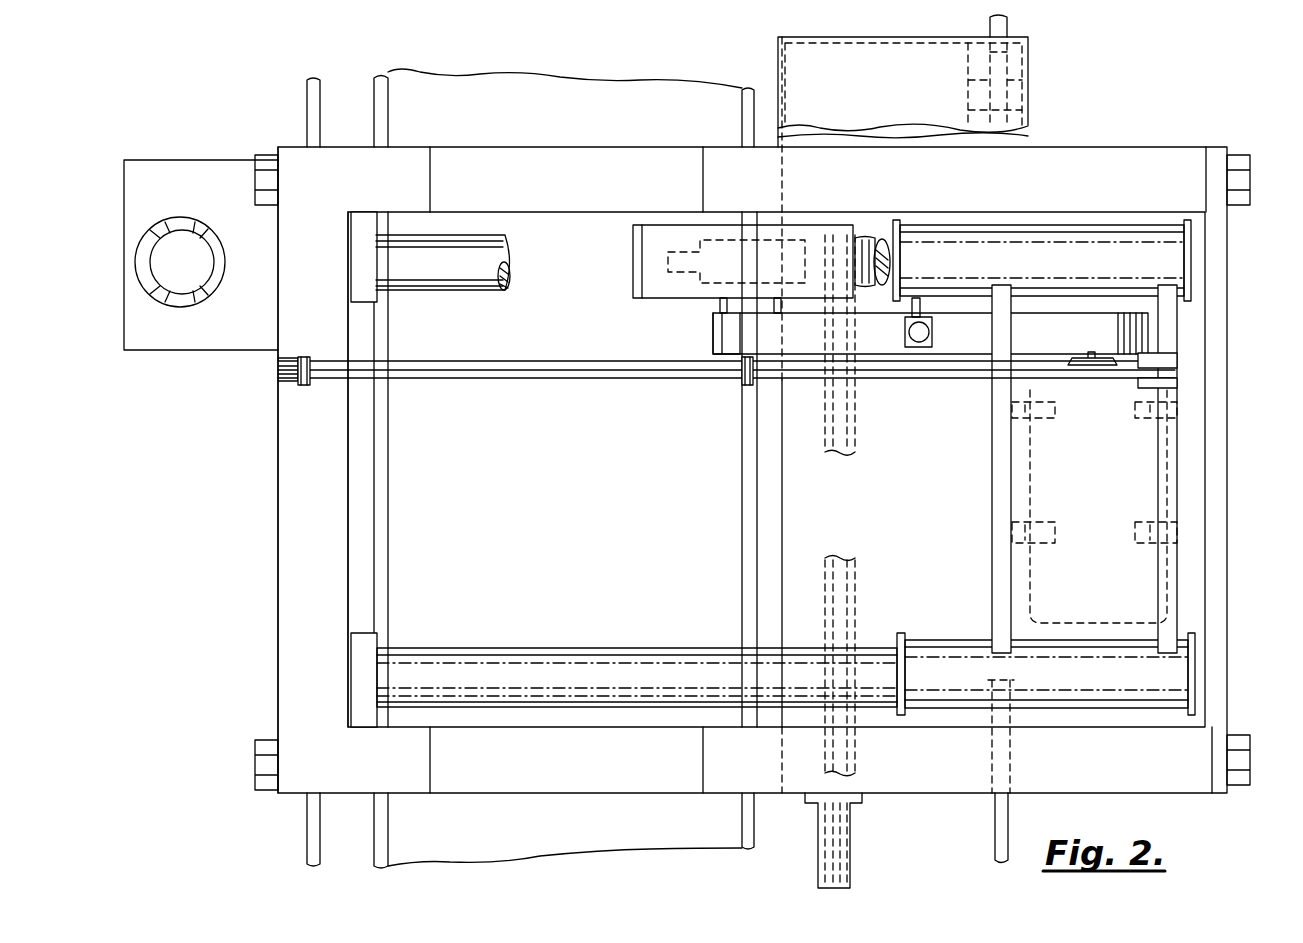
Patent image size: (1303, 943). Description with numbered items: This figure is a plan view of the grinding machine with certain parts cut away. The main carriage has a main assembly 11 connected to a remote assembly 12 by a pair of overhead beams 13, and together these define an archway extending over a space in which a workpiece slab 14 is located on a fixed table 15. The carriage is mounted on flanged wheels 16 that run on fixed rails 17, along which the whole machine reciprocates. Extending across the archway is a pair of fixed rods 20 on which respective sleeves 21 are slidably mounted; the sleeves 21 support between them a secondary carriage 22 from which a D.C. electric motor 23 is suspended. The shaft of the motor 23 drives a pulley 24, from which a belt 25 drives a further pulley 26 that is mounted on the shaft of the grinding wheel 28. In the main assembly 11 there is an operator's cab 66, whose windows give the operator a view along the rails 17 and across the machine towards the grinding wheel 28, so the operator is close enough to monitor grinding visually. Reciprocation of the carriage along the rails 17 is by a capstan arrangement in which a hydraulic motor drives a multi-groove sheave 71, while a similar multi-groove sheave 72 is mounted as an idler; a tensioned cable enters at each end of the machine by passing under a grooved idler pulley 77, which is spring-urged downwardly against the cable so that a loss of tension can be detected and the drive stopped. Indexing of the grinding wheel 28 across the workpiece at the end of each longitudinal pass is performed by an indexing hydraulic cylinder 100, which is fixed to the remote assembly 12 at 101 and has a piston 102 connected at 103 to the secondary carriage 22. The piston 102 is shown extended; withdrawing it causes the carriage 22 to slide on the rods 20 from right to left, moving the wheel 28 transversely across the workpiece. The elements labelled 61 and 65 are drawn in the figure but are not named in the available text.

The main assembly 11 is at (1190, 495).
The remote assembly 12 is at (288, 495).
The overhead beams 13 is at (548, 150).
The workpiece slab 14 is at (440, 76).
The fixed table 15 is at (741, 113).
The flanged wheels 16 is at (1027, 68).
The fixed rails 17 is at (306, 828).
The fixed rods 20 is at (483, 285).
The sleeves 21 is at (928, 232).
The secondary carriage 22 is at (995, 493).
The D.C. electric motor 23 is at (1138, 430).
The pulley 24 is at (1083, 320).
The belt 25 is at (968, 340).
The further pulley 26 is at (718, 311).
The grinding wheel 28 is at (668, 270).
The housing 61 is at (200, 162).
The pipe 65 is at (186, 306).
The operator's cab 66 is at (800, 60).
The multi-groove sheave 71 is at (852, 583).
The multi-groove sheave 72 is at (855, 432).
The grooved idler pulley 77 is at (850, 850).
The indexing hydraulic cylinder 100 is at (560, 376).
The fixing point 101 is at (293, 354).
The piston 102 is at (790, 378).
The connection point 103 is at (1175, 358).